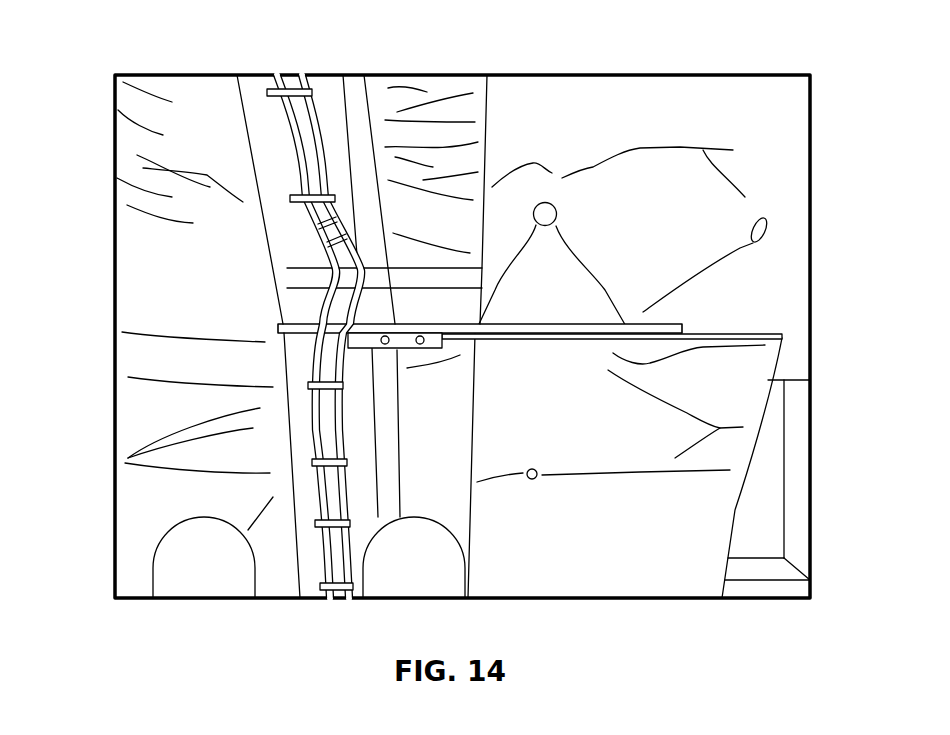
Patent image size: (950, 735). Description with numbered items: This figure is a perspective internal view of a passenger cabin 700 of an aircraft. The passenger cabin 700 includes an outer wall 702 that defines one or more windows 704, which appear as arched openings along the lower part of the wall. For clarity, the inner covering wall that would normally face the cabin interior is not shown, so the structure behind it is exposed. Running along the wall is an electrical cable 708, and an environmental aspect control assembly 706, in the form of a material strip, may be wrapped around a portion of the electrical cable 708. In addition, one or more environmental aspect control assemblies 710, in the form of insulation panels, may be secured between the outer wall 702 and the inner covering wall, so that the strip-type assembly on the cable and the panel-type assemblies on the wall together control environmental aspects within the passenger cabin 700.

The passenger cabin 700 is at (773, 148).
The outer wall 702 is at (133, 428).
The windows 704 is at (197, 575).
The environmental aspect control assembly 706 is at (355, 207).
The electrical cable 708 is at (355, 252).
The environmental aspect control assemblies 710 is at (197, 150).